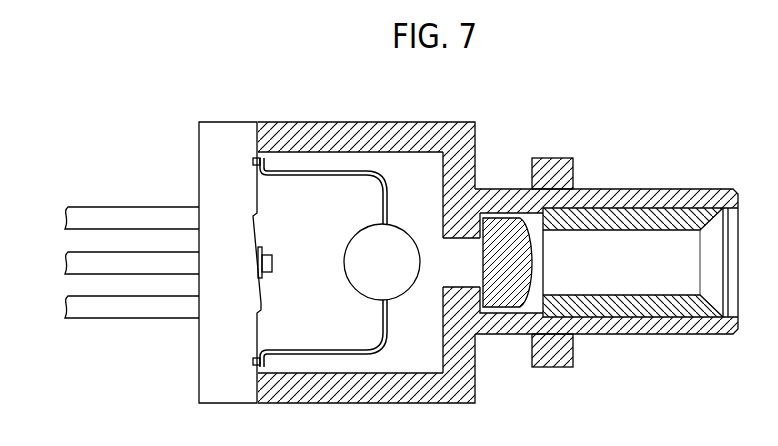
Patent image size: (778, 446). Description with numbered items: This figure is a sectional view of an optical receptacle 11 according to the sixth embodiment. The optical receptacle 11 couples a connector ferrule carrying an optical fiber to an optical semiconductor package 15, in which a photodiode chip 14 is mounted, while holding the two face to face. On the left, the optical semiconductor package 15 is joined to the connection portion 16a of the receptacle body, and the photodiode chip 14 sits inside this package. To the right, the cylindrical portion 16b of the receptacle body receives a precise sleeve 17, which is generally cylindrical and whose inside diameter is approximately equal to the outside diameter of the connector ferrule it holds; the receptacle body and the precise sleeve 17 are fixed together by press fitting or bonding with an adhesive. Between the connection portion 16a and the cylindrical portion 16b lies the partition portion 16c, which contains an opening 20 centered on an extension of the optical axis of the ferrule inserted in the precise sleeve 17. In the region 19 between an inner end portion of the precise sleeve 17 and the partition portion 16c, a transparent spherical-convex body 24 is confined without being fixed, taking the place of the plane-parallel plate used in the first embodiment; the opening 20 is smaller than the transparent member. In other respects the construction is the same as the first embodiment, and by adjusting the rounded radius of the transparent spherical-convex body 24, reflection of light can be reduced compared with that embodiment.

The optical receptacle 11 is at (632, 341).
The photodiode chip 14 is at (271, 250).
The optical semiconductor package 15 is at (223, 183).
The connection portion 16a is at (297, 136).
The cylindrical portion 16b is at (609, 190).
The partition portion 16c is at (455, 212).
The precise sleeve 17 is at (697, 195).
The region 19 is at (552, 367).
The opening 20 is at (455, 278).
The transparent spherical-convex body 24 is at (518, 307).